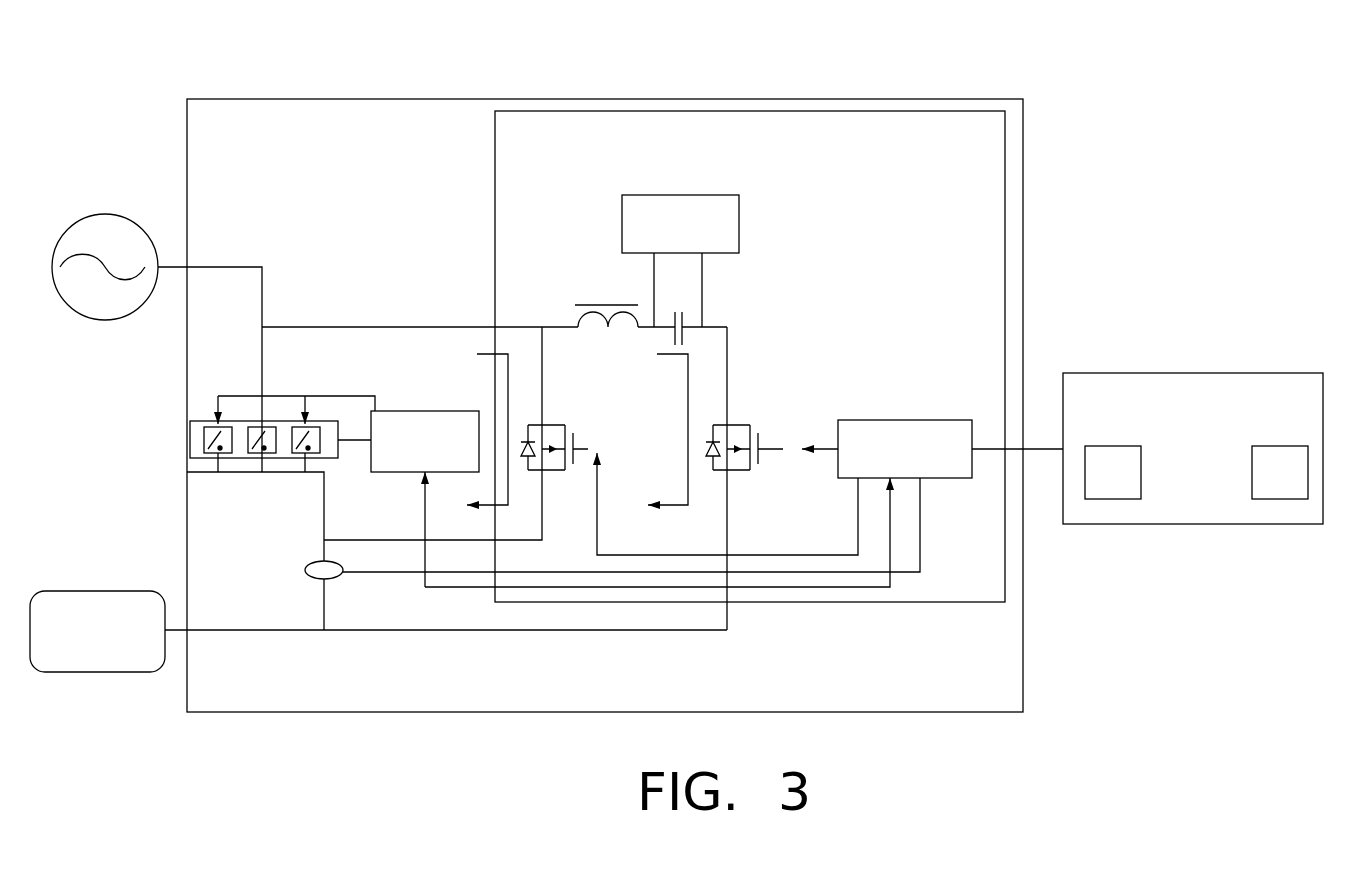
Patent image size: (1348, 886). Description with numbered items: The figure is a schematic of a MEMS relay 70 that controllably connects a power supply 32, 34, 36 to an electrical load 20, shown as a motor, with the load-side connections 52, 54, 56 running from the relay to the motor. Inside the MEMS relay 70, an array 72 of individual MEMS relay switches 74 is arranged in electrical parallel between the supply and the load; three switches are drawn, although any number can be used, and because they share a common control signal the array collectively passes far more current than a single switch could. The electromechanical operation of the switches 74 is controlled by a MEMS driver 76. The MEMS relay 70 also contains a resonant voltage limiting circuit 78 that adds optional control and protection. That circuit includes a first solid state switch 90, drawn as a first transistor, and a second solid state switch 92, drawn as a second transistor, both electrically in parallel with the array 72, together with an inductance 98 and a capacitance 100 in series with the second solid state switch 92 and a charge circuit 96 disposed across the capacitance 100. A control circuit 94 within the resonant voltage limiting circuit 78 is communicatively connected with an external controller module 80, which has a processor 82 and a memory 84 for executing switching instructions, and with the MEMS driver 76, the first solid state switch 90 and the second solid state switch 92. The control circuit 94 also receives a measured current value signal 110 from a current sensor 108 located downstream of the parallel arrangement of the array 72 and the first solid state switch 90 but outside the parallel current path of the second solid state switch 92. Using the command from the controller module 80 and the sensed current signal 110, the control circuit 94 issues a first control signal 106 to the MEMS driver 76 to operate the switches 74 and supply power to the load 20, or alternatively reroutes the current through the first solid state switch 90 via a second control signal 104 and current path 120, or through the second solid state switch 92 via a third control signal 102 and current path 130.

The MEMS relay 70 is at (466, 99).
The electrical load 20 is at (90, 677).
The power supply 32 is at (145, 325).
The power supply 34 is at (145, 325).
The power supply 36 is at (152, 240).
The motor phase line 52 is at (382, 587).
The motor phase line 54 is at (382, 587).
The motor phase line 56 is at (165, 597).
The array of MEMS relay switches 72 is at (349, 463).
The MEMS relay switch 74 is at (296, 444).
The MEMS driver 76 is at (393, 411).
The resonant voltage limiting circuit 78 is at (541, 176).
The controller module 80 is at (1218, 486).
The processor 82 is at (1131, 486).
The memory 84 is at (1297, 486).
The first solid state switch 90 is at (559, 414).
The second solid state switch 92 is at (749, 413).
The control circuit 94 is at (905, 420).
The charge circuit 96 is at (688, 197).
The inductance 98 is at (600, 296).
The capacitance 100 is at (668, 333).
The third control signal 102 is at (820, 447).
The second control signal 104 is at (597, 520).
The first control signal 106 is at (925, 545).
The current sensor 108 is at (306, 580).
The measured or sensed current value signal 110 is at (778, 590).
The current path 120 is at (503, 353).
The current path 130 is at (690, 364).